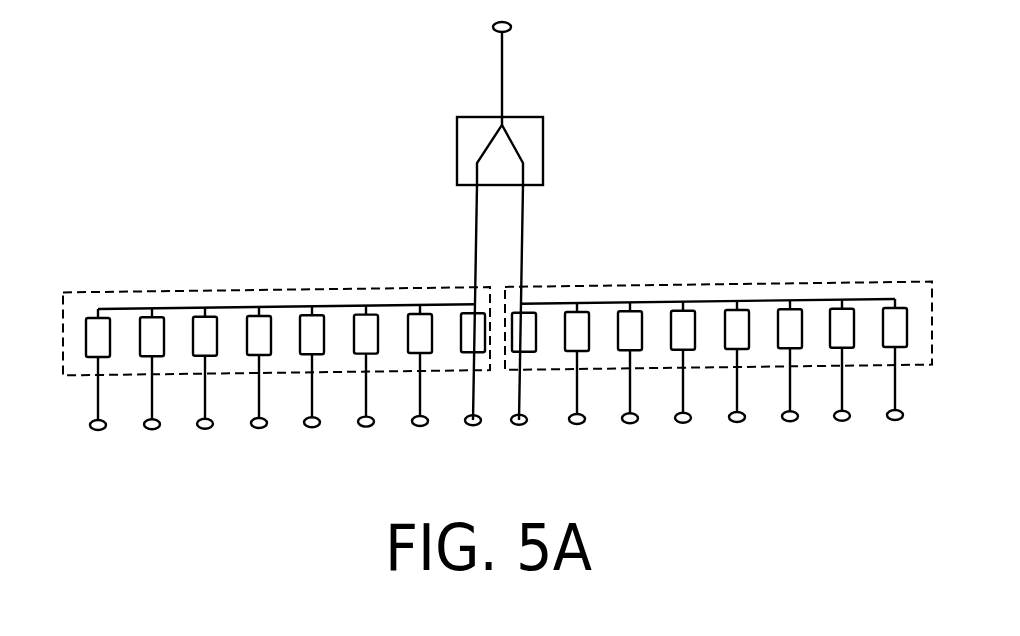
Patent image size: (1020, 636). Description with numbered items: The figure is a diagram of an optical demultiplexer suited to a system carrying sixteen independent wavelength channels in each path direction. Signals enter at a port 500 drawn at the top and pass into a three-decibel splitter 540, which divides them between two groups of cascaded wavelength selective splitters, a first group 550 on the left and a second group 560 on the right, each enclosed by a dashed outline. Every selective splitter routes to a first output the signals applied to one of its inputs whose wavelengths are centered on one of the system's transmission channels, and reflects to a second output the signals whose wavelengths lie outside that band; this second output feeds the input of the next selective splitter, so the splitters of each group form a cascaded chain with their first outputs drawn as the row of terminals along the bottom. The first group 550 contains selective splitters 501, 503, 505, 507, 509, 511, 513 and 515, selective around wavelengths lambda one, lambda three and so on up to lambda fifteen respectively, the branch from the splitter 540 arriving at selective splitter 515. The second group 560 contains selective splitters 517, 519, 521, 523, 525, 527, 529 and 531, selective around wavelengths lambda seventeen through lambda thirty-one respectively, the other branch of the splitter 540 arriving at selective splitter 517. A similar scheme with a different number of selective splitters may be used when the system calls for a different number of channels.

The port 500 is at (488, 38).
The 3 dB splitter 540 is at (553, 147).
The selective splitter 515 is at (468, 287).
The selective splitter 517 is at (527, 287).
The group of cascaded wavelength selective splitters 550 is at (70, 387).
The group of cascaded wavelength selective splitters 560 is at (928, 375).
The selective splitter 501 is at (96, 302).
The selective splitter 503 is at (150, 301).
The selective splitter 505 is at (203, 301).
The selective splitter 507 is at (257, 300).
The selective splitter 509 is at (310, 299).
The selective splitter 511 is at (364, 299).
The selective splitter 513 is at (418, 298).
The selective splitter 519 is at (575, 296).
The selective splitter 521 is at (628, 295).
The selective splitter 523 is at (681, 295).
The selective splitter 525 is at (735, 294).
The selective splitter 527 is at (788, 293).
The selective splitter 529 is at (840, 293).
The selective splitter 531 is at (893, 292).